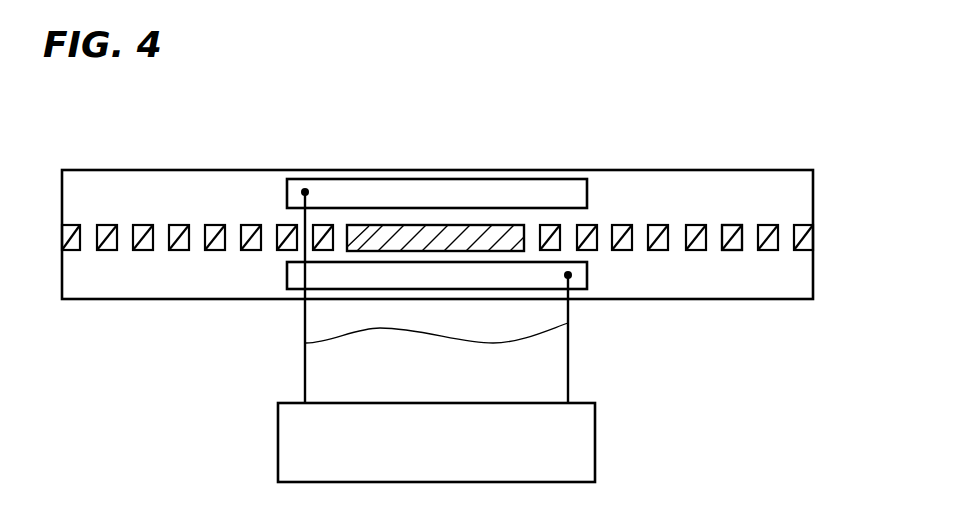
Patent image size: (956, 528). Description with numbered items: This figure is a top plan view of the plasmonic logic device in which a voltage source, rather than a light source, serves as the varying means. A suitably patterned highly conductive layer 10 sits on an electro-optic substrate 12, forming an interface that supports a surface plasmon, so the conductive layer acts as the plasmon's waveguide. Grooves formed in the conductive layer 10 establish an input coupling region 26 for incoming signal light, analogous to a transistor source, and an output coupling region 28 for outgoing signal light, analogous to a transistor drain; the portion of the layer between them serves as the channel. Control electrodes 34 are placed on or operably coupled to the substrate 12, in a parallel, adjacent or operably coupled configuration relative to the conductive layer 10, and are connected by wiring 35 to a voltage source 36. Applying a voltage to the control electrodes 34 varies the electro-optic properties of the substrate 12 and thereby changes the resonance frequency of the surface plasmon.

The conductive layer 10 is at (423, 237).
The electro-optic substrate 12 is at (83, 275).
The input coupling region 26 is at (143, 223).
The output coupling region 28 is at (729, 250).
The control electrodes 34 is at (587, 190).
The wires 35 is at (306, 343).
The voltage source 36 is at (595, 436).